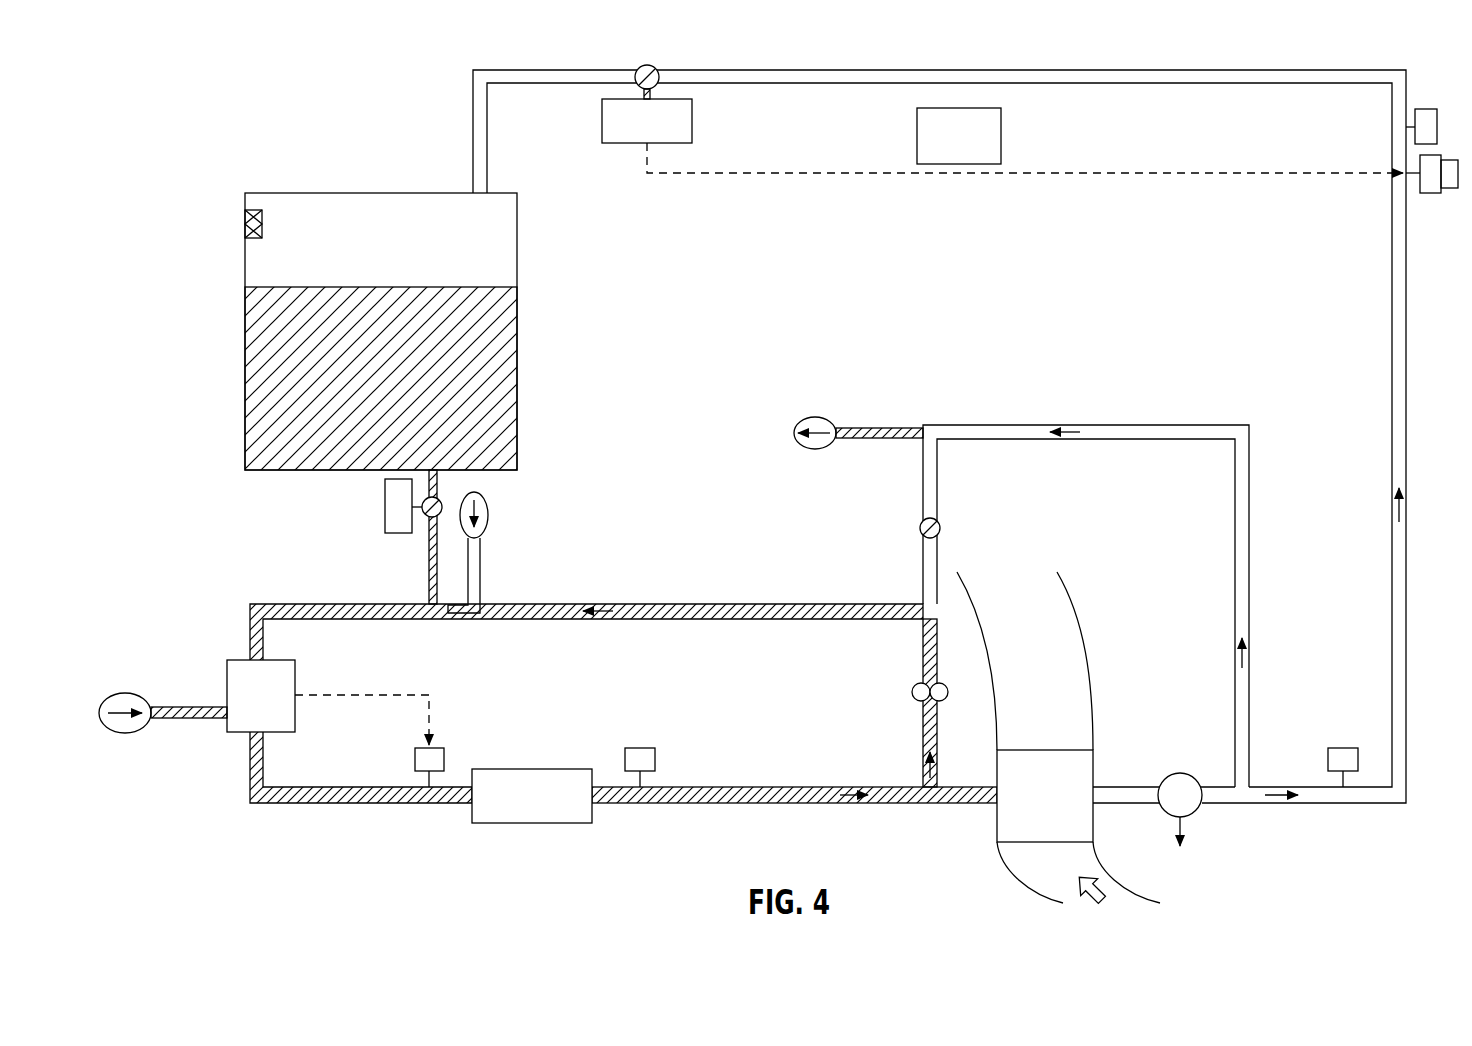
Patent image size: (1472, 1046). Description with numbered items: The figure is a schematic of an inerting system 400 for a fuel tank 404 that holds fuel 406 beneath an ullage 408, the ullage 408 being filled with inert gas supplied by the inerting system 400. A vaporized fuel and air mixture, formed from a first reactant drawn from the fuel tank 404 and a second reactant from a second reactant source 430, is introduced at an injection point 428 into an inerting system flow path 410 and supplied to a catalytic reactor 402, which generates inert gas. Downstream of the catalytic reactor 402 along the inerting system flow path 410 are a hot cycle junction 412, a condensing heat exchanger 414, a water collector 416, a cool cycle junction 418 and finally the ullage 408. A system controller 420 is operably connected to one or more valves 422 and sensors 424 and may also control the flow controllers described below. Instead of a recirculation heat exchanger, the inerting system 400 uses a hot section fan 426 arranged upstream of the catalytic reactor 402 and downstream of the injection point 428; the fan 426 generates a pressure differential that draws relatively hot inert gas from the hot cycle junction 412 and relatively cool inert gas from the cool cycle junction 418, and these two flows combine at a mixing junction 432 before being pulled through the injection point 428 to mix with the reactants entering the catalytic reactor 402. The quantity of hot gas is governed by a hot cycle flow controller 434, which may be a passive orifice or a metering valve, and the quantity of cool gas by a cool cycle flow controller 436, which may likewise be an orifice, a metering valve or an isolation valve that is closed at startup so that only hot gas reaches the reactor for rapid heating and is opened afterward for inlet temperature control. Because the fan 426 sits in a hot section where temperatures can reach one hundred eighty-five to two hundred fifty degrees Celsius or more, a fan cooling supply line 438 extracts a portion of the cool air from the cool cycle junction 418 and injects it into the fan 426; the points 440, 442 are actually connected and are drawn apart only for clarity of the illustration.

The inerting system 400 is at (300, 50).
The catalytic reactor 402 is at (512, 823).
The fuel tank 404 is at (517, 388).
The fuel 406 is at (343, 442).
The ullage 408 is at (315, 217).
The inerting system flow path 410 is at (1033, 77).
The hot cycle junction 412 is at (926, 814).
The condensing heat exchanger 414 is at (1095, 768).
The water collector 416 is at (1197, 812).
The cool cycle junction 418 is at (1266, 766).
The system controller 420 is at (980, 153).
The valve 422 is at (668, 136).
The sensor 424 is at (1429, 202).
The hot section fan 426 is at (238, 720).
The injection point 428 is at (481, 626).
The second reactant source 430 is at (489, 513).
The mixing junction 432 is at (945, 604).
The hot cycle flow controller 434 is at (912, 692).
The cool cycle flow controller 436 is at (920, 528).
The fan cooling supply line 438 is at (183, 705).
The connection point 440 is at (815, 418).
The connection point 442 is at (125, 692).